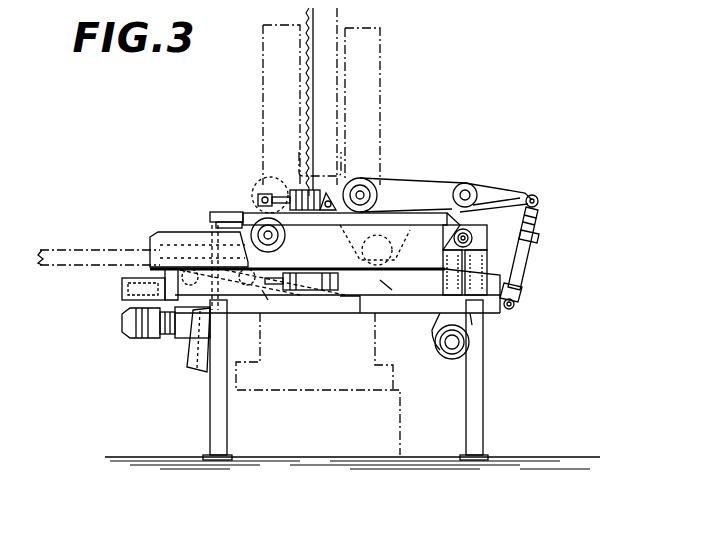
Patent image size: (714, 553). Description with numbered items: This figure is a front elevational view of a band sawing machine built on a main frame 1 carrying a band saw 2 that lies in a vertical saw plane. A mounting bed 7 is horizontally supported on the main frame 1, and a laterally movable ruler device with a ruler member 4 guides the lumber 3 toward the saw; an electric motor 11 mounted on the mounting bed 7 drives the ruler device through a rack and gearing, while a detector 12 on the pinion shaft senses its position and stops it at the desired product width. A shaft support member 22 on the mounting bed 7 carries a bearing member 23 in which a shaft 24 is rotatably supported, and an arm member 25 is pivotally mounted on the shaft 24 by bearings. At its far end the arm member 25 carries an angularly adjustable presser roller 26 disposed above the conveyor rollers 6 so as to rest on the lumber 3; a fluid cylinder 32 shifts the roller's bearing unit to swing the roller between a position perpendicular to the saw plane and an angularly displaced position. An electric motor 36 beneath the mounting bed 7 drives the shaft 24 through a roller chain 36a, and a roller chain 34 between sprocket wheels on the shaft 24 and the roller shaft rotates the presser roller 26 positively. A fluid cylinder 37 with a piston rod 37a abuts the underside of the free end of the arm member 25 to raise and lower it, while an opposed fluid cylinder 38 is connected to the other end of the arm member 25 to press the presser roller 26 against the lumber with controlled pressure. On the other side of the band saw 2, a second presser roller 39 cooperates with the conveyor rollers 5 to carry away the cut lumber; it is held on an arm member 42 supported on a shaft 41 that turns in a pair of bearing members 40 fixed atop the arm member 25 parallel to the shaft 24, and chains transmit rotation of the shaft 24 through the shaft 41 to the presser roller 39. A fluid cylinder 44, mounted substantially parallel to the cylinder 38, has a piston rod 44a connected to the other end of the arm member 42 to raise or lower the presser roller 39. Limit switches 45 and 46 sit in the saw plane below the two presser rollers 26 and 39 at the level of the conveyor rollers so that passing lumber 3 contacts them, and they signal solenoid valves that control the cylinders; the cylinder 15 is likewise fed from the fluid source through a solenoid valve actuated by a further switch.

The main frame 1 is at (383, 85).
The band saw 2 is at (305, 82).
The lumber 3 is at (107, 260).
The ruler member 4 is at (150, 237).
The conveyor rollers 5 is at (358, 290).
The conveyor rollers 6 is at (183, 267).
The mounting bed 7 is at (351, 315).
The electric motor 11 is at (143, 332).
The detector 12 is at (123, 291).
The cylinder 15 is at (310, 290).
The shaft support member 22 is at (522, 292).
The bearing member 23 is at (474, 241).
The shaft 24 is at (480, 197).
The arm member 25 is at (421, 212).
The presser roller 26 is at (262, 220).
The fluid cylinder 32 is at (276, 191).
The roller chain 34 is at (420, 250).
The electric motor 36 is at (448, 360).
The roller chain 36a is at (486, 318).
The fluid cylinder 37 is at (196, 371).
The piston rod 37a is at (214, 218).
The fluid cylinder 38 is at (530, 250).
The presser roller 39 is at (360, 177).
The bearing members 40 is at (461, 189).
The shaft 41 is at (470, 184).
The arm member 42 is at (394, 181).
The fluid cylinder 44 is at (538, 237).
The piston rod 44a is at (538, 204).
The limit switch 45 is at (268, 300).
The limit switch 46 is at (384, 290).